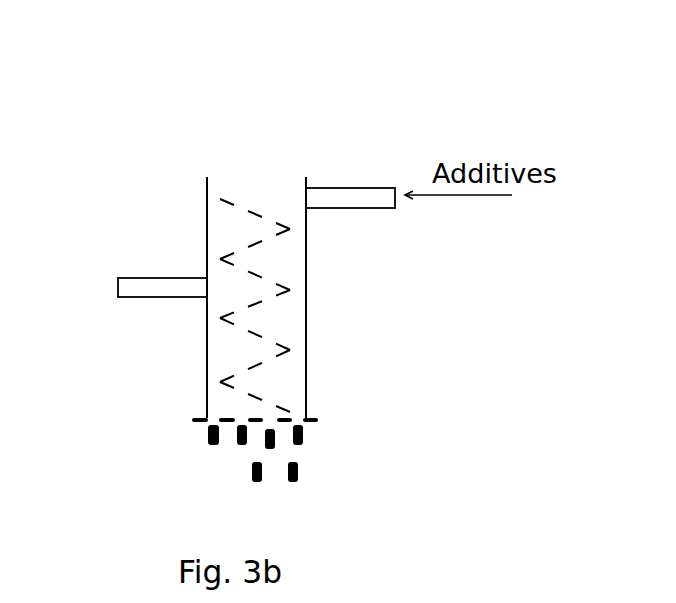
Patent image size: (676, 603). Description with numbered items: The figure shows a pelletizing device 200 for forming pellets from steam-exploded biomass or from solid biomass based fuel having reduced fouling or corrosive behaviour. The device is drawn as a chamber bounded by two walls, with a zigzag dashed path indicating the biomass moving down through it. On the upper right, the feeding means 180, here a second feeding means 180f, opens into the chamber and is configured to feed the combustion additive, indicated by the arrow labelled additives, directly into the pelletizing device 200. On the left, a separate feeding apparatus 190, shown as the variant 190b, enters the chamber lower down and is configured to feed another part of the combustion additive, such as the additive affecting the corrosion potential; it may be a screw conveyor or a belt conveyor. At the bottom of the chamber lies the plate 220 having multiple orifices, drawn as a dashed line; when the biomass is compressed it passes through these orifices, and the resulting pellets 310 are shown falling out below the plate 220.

The pelletizing device 200 is at (175, 127).
The feeding means 180 is at (388, 159).
The second feeding means 180f is at (340, 197).
The separate feeding apparatus 190 is at (109, 257).
The separate feeding apparatus 190b is at (127, 288).
The plate 220 is at (313, 423).
The pellets 310 is at (213, 447).